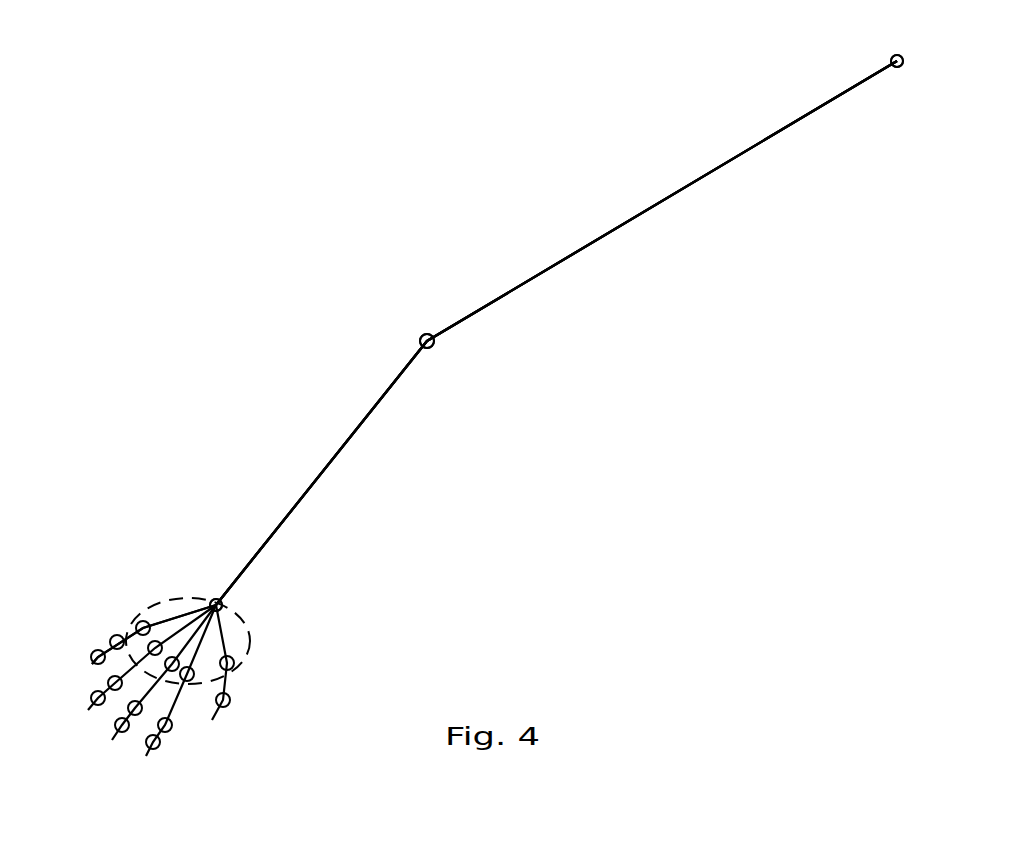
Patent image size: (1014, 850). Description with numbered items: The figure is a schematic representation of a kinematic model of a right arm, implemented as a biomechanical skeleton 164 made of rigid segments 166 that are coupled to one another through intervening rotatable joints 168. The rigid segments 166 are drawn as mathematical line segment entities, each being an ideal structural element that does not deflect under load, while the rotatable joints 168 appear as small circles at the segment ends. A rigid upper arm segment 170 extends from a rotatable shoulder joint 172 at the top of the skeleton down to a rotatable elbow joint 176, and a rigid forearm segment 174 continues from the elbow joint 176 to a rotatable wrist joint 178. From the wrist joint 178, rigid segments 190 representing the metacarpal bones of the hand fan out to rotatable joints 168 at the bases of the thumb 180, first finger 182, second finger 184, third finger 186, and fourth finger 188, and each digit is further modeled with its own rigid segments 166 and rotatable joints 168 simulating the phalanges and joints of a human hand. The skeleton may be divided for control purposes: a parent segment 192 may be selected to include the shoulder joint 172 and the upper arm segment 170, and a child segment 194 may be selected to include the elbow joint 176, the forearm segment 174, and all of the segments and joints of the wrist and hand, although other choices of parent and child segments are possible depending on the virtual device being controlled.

The biomechanical skeleton 164 is at (312, 277).
The rigid segments 166 is at (668, 197).
The rotatable joints 168 is at (893, 56).
The rigid upper arm segment 170 is at (625, 225).
The rotatable shoulder joint 172 is at (900, 67).
The rigid forearm segment 174 is at (327, 467).
The rotatable elbow joint 176 is at (432, 345).
The rotatable wrist joint 178 is at (220, 603).
The thumb 180 is at (213, 718).
The first finger 182 is at (146, 756).
The second finger 184 is at (112, 741).
The third finger 186 is at (87, 712).
The fourth finger 188 is at (90, 665).
The rigid segments representing metacarpal bones 190 is at (248, 636).
The parent segment 192 is at (655, 282).
The child segment 194 is at (393, 503).